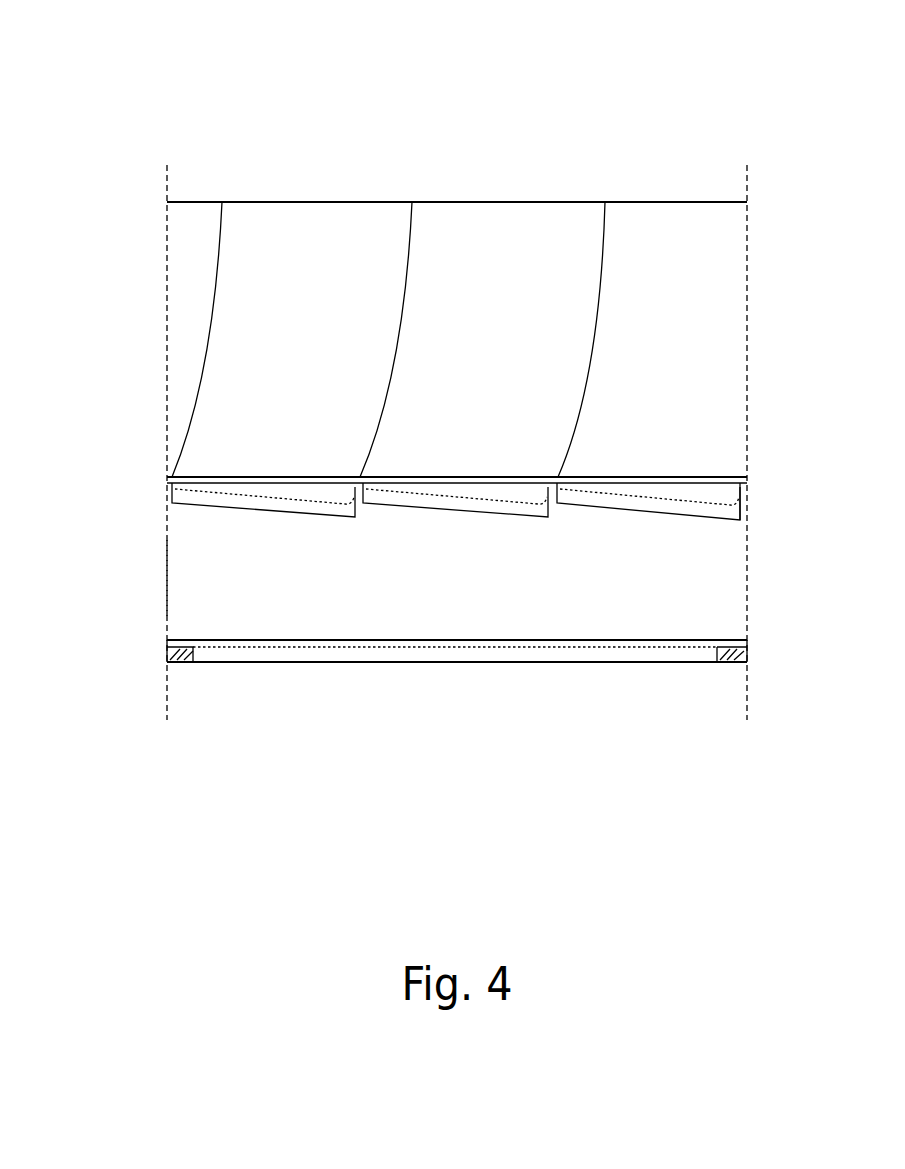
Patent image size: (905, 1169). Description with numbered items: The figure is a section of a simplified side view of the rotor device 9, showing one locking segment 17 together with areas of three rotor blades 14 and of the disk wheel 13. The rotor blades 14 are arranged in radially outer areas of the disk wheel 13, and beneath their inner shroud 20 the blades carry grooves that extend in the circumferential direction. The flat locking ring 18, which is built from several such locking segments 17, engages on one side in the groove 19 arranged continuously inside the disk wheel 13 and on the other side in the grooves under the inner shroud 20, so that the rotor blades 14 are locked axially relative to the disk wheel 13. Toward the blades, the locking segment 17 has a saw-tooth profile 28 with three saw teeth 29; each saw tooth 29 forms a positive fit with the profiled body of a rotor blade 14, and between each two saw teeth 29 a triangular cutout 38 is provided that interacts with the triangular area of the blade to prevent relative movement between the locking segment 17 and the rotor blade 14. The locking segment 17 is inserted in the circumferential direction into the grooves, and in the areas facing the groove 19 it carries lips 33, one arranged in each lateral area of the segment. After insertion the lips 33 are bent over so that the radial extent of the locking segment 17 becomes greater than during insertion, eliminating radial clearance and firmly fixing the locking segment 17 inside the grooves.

The rotor device 9 is at (186, 108).
The disk wheel 13 is at (166, 707).
The rotor blade 14 is at (197, 380).
The locking segment 17 is at (188, 535).
The locking ring 18 is at (166, 578).
The groove 19 is at (168, 648).
The inner shroud 20 is at (172, 477).
The saw-tooth profile 28 is at (605, 497).
The saw tooth 29 is at (268, 508).
The lip 33 is at (168, 655).
The triangular cutout 38 is at (333, 512).